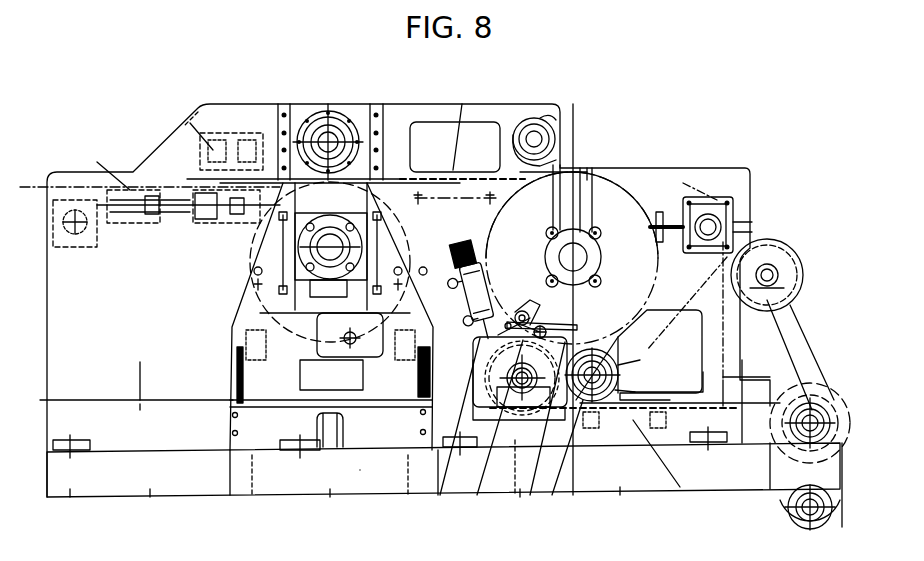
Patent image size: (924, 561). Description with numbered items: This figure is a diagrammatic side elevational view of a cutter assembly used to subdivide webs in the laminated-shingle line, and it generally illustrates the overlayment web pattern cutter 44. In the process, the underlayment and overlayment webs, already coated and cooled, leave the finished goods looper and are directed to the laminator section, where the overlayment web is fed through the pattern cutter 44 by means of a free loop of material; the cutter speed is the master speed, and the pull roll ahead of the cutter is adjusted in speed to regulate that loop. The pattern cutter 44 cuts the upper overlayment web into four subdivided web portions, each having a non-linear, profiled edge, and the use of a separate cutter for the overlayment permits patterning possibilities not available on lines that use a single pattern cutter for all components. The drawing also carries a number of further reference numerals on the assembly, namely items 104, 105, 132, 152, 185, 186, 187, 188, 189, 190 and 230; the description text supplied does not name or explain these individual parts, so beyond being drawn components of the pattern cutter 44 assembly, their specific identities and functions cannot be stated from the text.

The OW pattern cutter 44 is at (656, 107).
The base frame 104 is at (230, 434).
The tie bar 105 is at (418, 200).
The mounting block 132 is at (605, 372).
The pneumatic cylinder 152 is at (468, 294).
The drive wheel 185 is at (586, 347).
The gear housing 186 is at (520, 356).
The crank pivot 187 is at (527, 301).
The crank arm 188 is at (524, 282).
The connecting bar 189 is at (542, 272).
The link 190 is at (507, 214).
The shaft assembly 230 is at (205, 225).